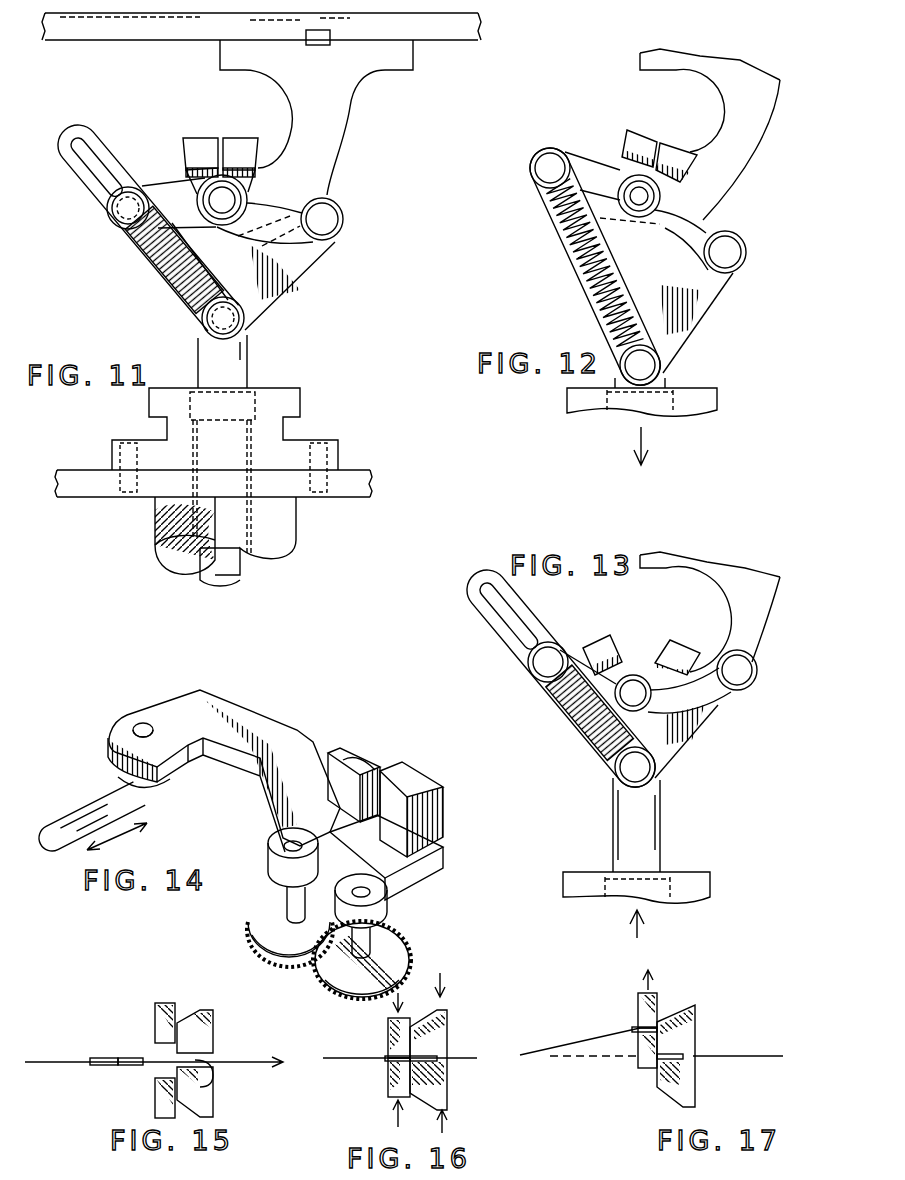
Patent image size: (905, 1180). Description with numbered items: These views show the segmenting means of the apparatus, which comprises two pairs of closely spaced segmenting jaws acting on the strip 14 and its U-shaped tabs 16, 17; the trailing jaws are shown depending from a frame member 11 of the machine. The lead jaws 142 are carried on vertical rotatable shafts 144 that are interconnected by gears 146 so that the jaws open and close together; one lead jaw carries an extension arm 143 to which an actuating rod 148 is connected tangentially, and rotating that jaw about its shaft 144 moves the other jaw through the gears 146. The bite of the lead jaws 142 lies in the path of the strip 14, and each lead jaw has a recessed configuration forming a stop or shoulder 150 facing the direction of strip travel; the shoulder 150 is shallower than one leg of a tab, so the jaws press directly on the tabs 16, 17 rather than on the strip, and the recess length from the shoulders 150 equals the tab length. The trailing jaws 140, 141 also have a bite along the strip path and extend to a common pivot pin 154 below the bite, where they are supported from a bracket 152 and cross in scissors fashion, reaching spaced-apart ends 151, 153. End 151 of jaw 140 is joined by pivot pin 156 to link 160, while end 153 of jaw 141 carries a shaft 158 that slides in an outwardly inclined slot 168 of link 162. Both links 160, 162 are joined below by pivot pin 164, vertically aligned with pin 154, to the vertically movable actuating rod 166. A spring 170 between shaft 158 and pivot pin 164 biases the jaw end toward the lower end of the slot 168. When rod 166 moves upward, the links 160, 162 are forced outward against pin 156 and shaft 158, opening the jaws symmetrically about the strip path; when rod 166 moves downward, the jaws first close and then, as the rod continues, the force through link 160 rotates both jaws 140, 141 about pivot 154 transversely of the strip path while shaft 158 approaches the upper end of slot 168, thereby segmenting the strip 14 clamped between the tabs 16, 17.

In FIG. 11, the frame rail 11 is at (389, 32).
In FIG. 15, the strip 14 is at (45, 1060).
In FIG. 16, the strip 14 is at (340, 1058).
In FIG. 17, the strip 14 is at (520, 1055).
In FIG. 15, the trailing tab 16 is at (100, 1058).
In FIG. 16, the trailing tab 16 is at (397, 1056).
In FIG. 17, the trailing tab 16 is at (638, 1030).
In FIG. 15, the tab 17 is at (130, 1058).
In FIG. 16, the tab 17 is at (424, 1056).
In FIG. 17, the tab 17 is at (672, 1054).
In FIG. 11, the trailing jaw 140 is at (204, 138).
In FIG. 12, the trailing jaw 140 is at (648, 130).
In FIG. 13, the trailing jaw 140 is at (603, 645).
In FIG. 15, the trailing jaw 140 is at (165, 1105).
In FIG. 16, the trailing jaw 140 is at (390, 1077).
In FIG. 17, the trailing jaw 140 is at (642, 1062).
In FIG. 11, the trailing jaw 141 is at (243, 138).
In FIG. 12, the trailing jaw 141 is at (683, 146).
In FIG. 13, the trailing jaw 141 is at (670, 645).
In FIG. 15, the trailing jaw 141 is at (158, 1006).
In FIG. 16, the trailing jaw 141 is at (390, 1030).
In FIG. 17, the trailing jaw 141 is at (660, 1020).
In FIG. 14, the lead jaw 142 is at (438, 790).
In FIG. 15, the lead jaw 142 is at (205, 1075).
In FIG. 16, the lead jaw 142 is at (447, 1060).
In FIG. 17, the lead jaw 142 is at (697, 1060).
In FIG. 14, the extension arm 143 is at (222, 727).
In FIG. 14, the shaft 144 is at (318, 928).
In FIG. 14, the gear 146 is at (312, 972).
In FIG. 14, the actuating rod 148 is at (83, 831).
In FIG. 14, the shoulder 150 is at (348, 752).
In FIG. 15, the shoulder 150 is at (207, 1078).
In FIG. 11, the end of jaw 151 is at (292, 237).
In FIG. 12, the end of jaw 151 is at (692, 242).
In FIG. 13, the end of jaw 151 is at (713, 662).
In FIG. 11, the bracket 152 is at (305, 91).
In FIG. 12, the bracket 152 is at (749, 106).
In FIG. 13, the bracket 152 is at (749, 601).
In FIG. 11, the end of jaw 153 is at (148, 188).
In FIG. 12, the end of jaw 153 is at (578, 162).
In FIG. 13, the end of jaw 153 is at (573, 650).
In FIG. 11, the pivot pin 154 is at (225, 200).
In FIG. 12, the pivot pin 154 is at (652, 196).
In FIG. 13, the pivot pin 154 is at (650, 693).
In FIG. 11, the pivot pin 156 is at (322, 217).
In FIG. 12, the pivot pin 156 is at (728, 252).
In FIG. 13, the pivot pin 156 is at (748, 676).
In FIG. 11, the shaft 158 is at (128, 208).
In FIG. 12, the shaft 158 is at (550, 168).
In FIG. 13, the shaft 158 is at (548, 662).
In FIG. 11, the link 160 is at (248, 286).
In FIG. 12, the link 160 is at (683, 302).
In FIG. 13, the link 160 is at (656, 739).
In FIG. 11, the link 162 is at (141, 258).
In FIG. 12, the link 162 is at (567, 252).
In FIG. 13, the link 162 is at (490, 592).
In FIG. 11, the pivot pin 164 is at (225, 318).
In FIG. 12, the pivot pin 164 is at (655, 360).
In FIG. 13, the pivot pin 164 is at (657, 767).
In FIG. 11, the actuating rod 166 is at (207, 377).
In FIG. 12, the actuating rod 166 is at (668, 380).
In FIG. 13, the actuating rod 166 is at (649, 834).
In FIG. 11, the slot 168 is at (90, 165).
In FIG. 12, the slot 168 is at (562, 222).
In FIG. 13, the slot 168 is at (515, 623).
In FIG. 11, the spring 170 is at (176, 282).
In FIG. 12, the spring 170 is at (590, 290).
In FIG. 13, the spring 170 is at (574, 722).